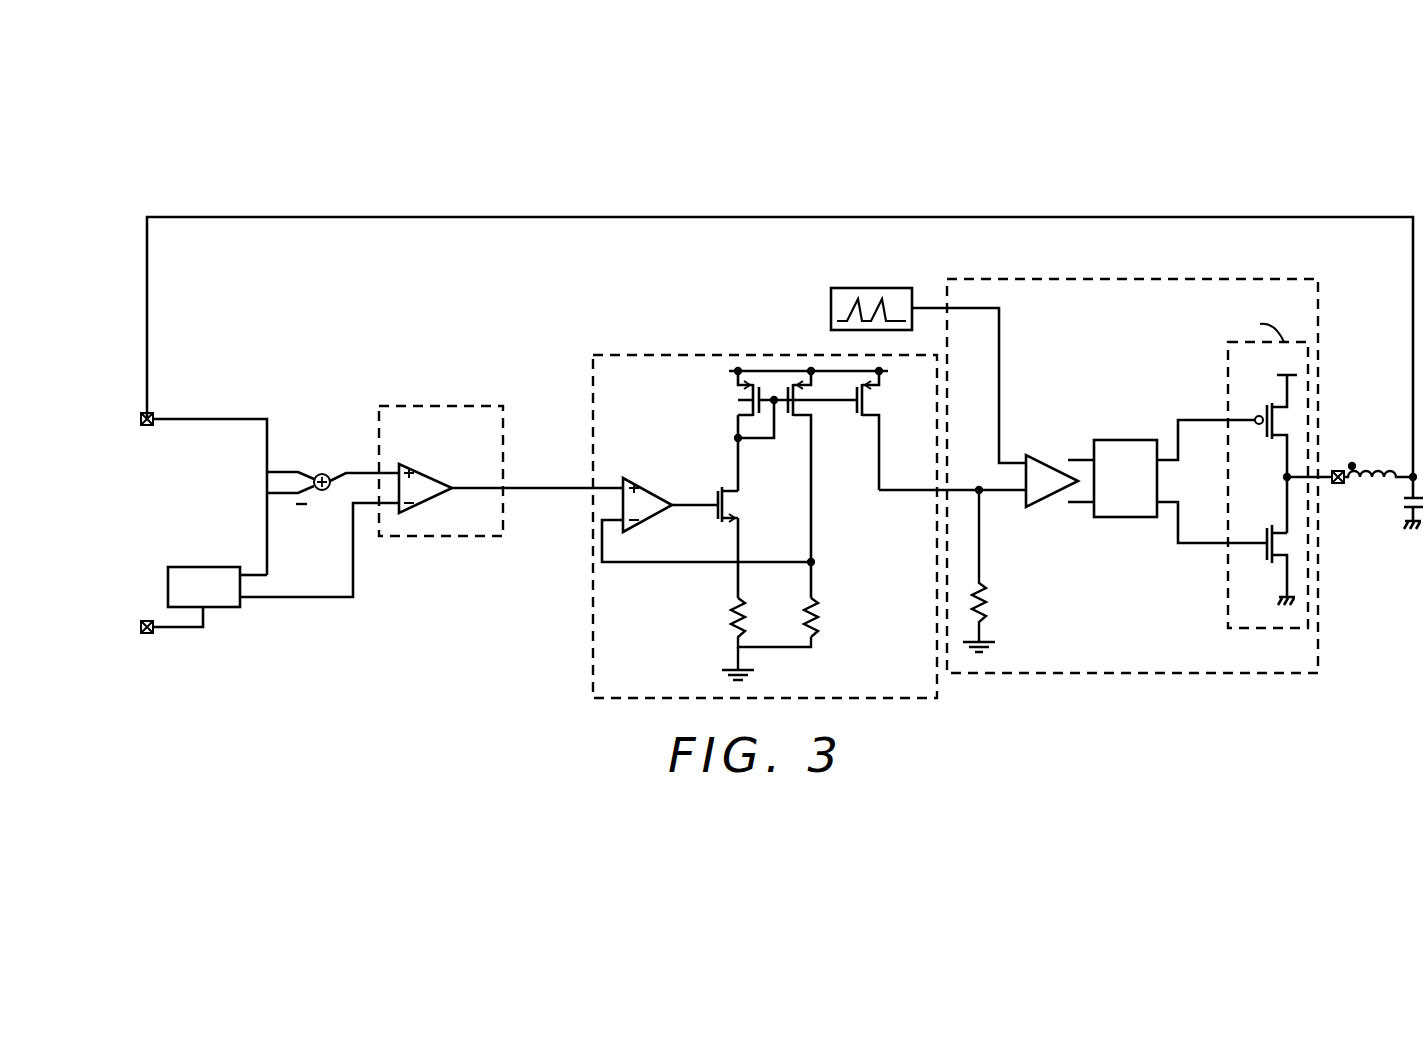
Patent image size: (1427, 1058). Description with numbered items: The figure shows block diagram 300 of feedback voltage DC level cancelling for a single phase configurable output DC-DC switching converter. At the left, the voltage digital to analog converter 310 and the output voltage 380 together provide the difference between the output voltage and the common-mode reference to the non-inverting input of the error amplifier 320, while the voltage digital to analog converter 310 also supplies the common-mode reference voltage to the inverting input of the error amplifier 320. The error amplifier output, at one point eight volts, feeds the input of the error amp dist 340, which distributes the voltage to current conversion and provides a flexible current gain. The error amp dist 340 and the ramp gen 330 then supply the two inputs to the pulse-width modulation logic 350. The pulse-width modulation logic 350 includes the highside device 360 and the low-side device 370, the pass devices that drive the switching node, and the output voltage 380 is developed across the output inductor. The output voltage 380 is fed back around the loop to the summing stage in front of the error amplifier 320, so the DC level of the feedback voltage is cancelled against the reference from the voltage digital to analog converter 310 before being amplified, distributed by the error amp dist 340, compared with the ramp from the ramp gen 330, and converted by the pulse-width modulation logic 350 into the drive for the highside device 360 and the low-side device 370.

The block diagram 300 is at (276, 138).
The voltage digital to analog converter VDAC 310 is at (231, 565).
The error amplifier 320 is at (473, 406).
The ramp gen 330 is at (831, 300).
The error amp dist 340 is at (684, 355).
The pulse-width modulation (PWM) logic 350 is at (1043, 279).
The highside device 360 is at (1262, 412).
The low-side device 370 is at (1262, 540).
The output voltage VOUT 380 is at (1402, 500).